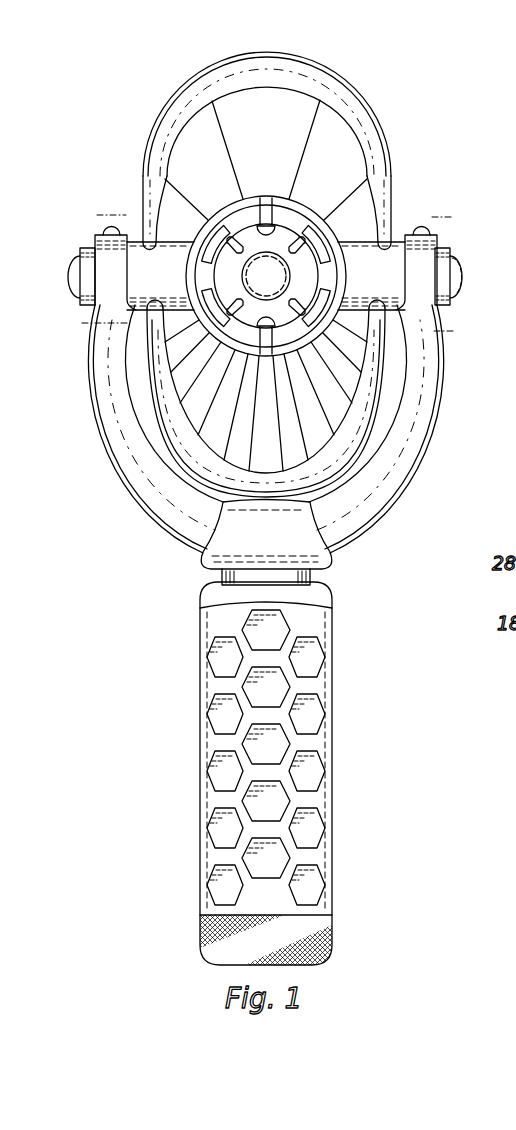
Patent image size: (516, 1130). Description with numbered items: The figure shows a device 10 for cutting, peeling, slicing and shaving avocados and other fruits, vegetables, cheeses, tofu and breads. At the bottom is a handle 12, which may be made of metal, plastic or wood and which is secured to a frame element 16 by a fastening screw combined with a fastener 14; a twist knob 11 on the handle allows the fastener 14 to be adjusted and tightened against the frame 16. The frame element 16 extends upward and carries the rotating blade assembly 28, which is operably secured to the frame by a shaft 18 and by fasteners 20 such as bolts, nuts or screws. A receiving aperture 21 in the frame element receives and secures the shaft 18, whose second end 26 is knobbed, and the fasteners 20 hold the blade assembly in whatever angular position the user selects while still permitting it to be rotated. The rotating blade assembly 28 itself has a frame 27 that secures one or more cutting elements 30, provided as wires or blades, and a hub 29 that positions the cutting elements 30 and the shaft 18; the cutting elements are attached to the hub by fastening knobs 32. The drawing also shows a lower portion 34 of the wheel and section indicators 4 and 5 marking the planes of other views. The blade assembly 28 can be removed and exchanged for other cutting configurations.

The device 10 is at (124, 97).
The twist knob 11 is at (322, 935).
The handle 12 is at (207, 858).
The fastener 14 is at (213, 570).
The frame element 16 is at (438, 416).
The shaft 18 is at (383, 205).
The fasteners 20 is at (68, 277).
The receiving aperture 21 is at (456, 270).
The second end 26 is at (132, 227).
The frame 27 is at (358, 123).
The rotating blade assembly 28 is at (326, 54).
The hub 29 is at (222, 238).
The cutting elements 30 is at (266, 119).
The fastening knobs 32 is at (348, 225).
The lower rim 34 is at (368, 336).
The section line 4- 4 is at (455, 274).
The section line 5- 5 is at (94, 275).